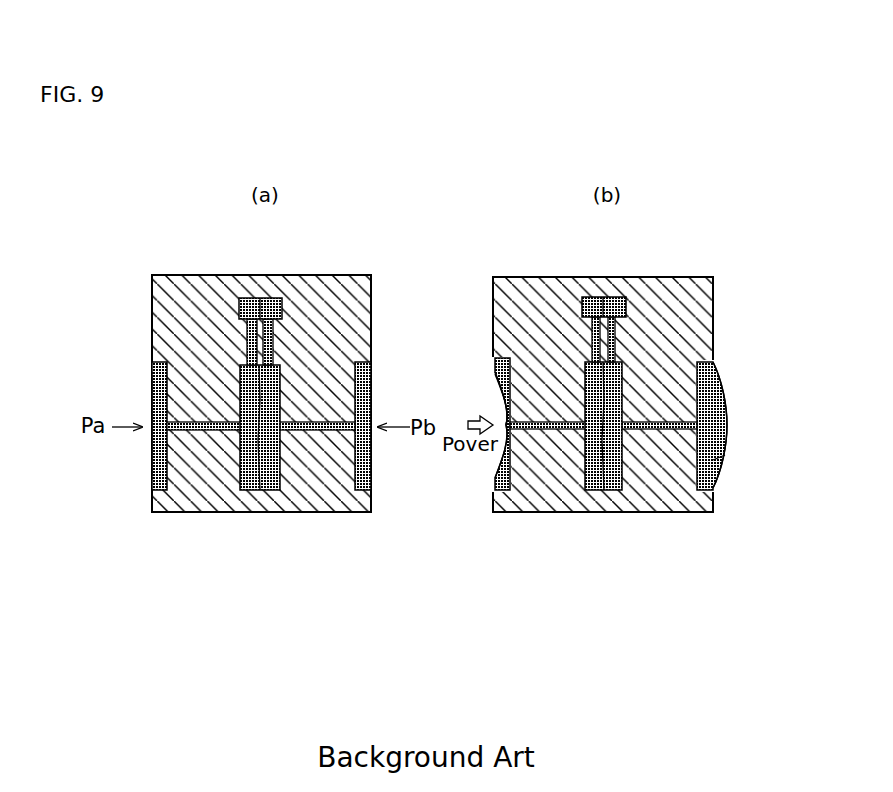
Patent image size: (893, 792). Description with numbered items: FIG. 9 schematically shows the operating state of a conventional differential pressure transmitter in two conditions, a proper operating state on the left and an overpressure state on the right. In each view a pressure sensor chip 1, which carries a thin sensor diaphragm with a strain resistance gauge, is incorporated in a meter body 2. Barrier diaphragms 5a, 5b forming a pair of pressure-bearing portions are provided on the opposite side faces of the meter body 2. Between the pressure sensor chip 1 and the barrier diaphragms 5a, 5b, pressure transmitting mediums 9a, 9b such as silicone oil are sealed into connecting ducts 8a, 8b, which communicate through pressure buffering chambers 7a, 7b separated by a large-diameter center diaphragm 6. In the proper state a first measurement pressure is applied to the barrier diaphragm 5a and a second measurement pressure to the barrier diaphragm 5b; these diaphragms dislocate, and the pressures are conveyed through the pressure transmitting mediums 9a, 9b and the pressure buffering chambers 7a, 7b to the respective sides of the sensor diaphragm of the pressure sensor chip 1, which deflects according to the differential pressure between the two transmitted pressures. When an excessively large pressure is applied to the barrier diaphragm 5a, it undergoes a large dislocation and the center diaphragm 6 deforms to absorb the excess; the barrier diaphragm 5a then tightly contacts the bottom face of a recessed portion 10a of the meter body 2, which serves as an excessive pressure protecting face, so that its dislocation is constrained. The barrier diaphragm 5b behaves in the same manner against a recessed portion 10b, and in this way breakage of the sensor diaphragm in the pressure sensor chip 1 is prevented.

The pressure sensor chip 1 is at (261, 312).
The meter body 2 is at (151, 297).
The barrier diaphragm 5a is at (148, 392).
The barrier diaphragm 5b is at (375, 452).
The center diaphragm 6 is at (259, 455).
The pressure buffering chamber 7a is at (245, 360).
The pressure buffering chamber 7b is at (270, 378).
The connecting duct 8a is at (203, 431).
The connecting duct 8b is at (322, 431).
The pressure transmitting medium 9a is at (157, 442).
The pressure transmitting medium 9b is at (358, 400).
The recessed portion 10a is at (493, 373).
The recessed portion 10b is at (720, 467).